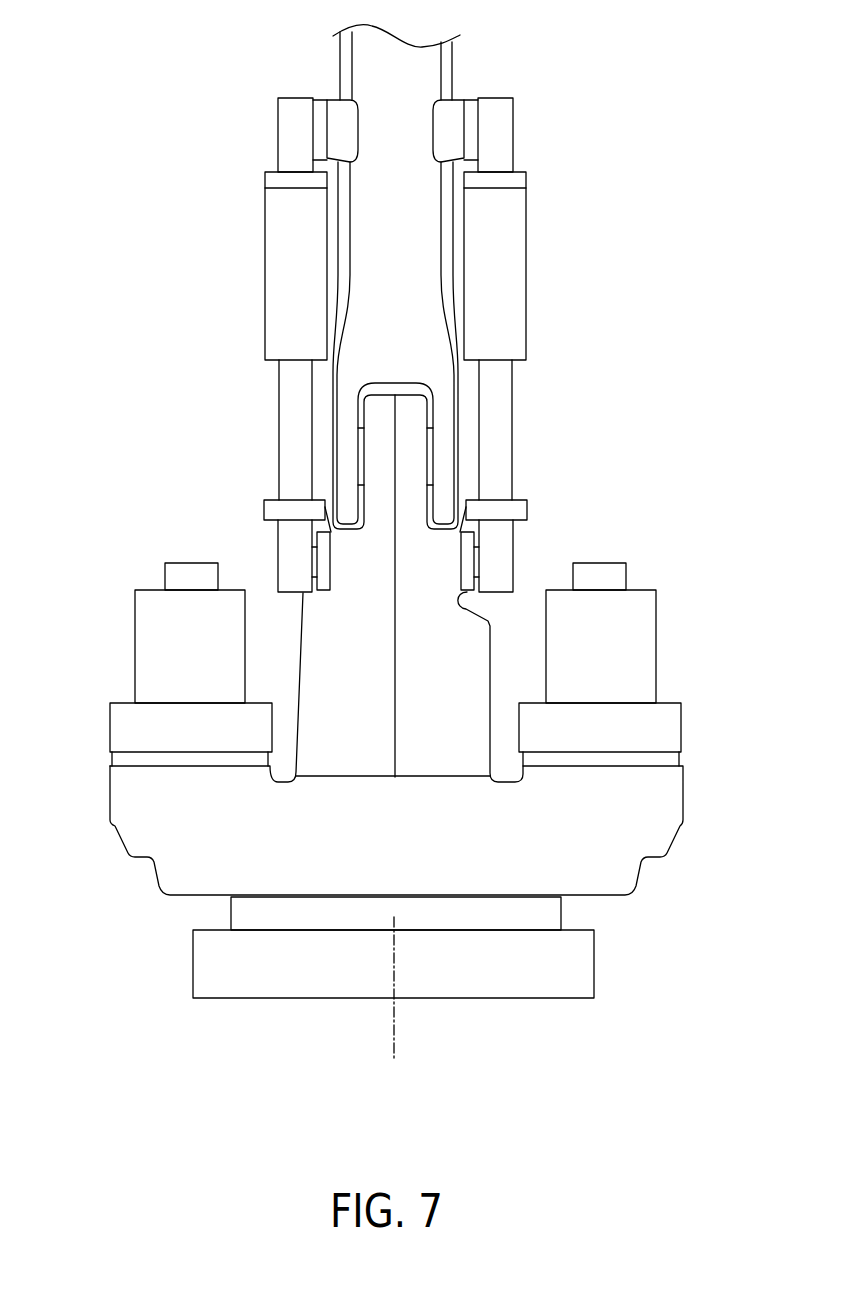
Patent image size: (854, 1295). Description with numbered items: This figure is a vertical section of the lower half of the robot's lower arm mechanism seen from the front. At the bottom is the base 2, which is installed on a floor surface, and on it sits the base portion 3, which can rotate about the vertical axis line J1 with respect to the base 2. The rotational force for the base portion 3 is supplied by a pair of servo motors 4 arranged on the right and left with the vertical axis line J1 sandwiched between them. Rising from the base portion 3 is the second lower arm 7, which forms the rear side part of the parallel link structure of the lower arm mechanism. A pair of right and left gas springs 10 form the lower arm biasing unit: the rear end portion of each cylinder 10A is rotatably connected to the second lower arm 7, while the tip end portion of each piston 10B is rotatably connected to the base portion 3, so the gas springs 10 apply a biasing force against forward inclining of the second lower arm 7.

The second lower arm 7 is at (448, 73).
The gas spring 10 is at (395, 345).
The cylinder 10A is at (526, 255).
The piston 10B is at (513, 410).
The servo motor 4 is at (658, 602).
The base portion 3 is at (663, 840).
The base 2 is at (195, 977).
The vertical axis line J1 is at (394, 1025).